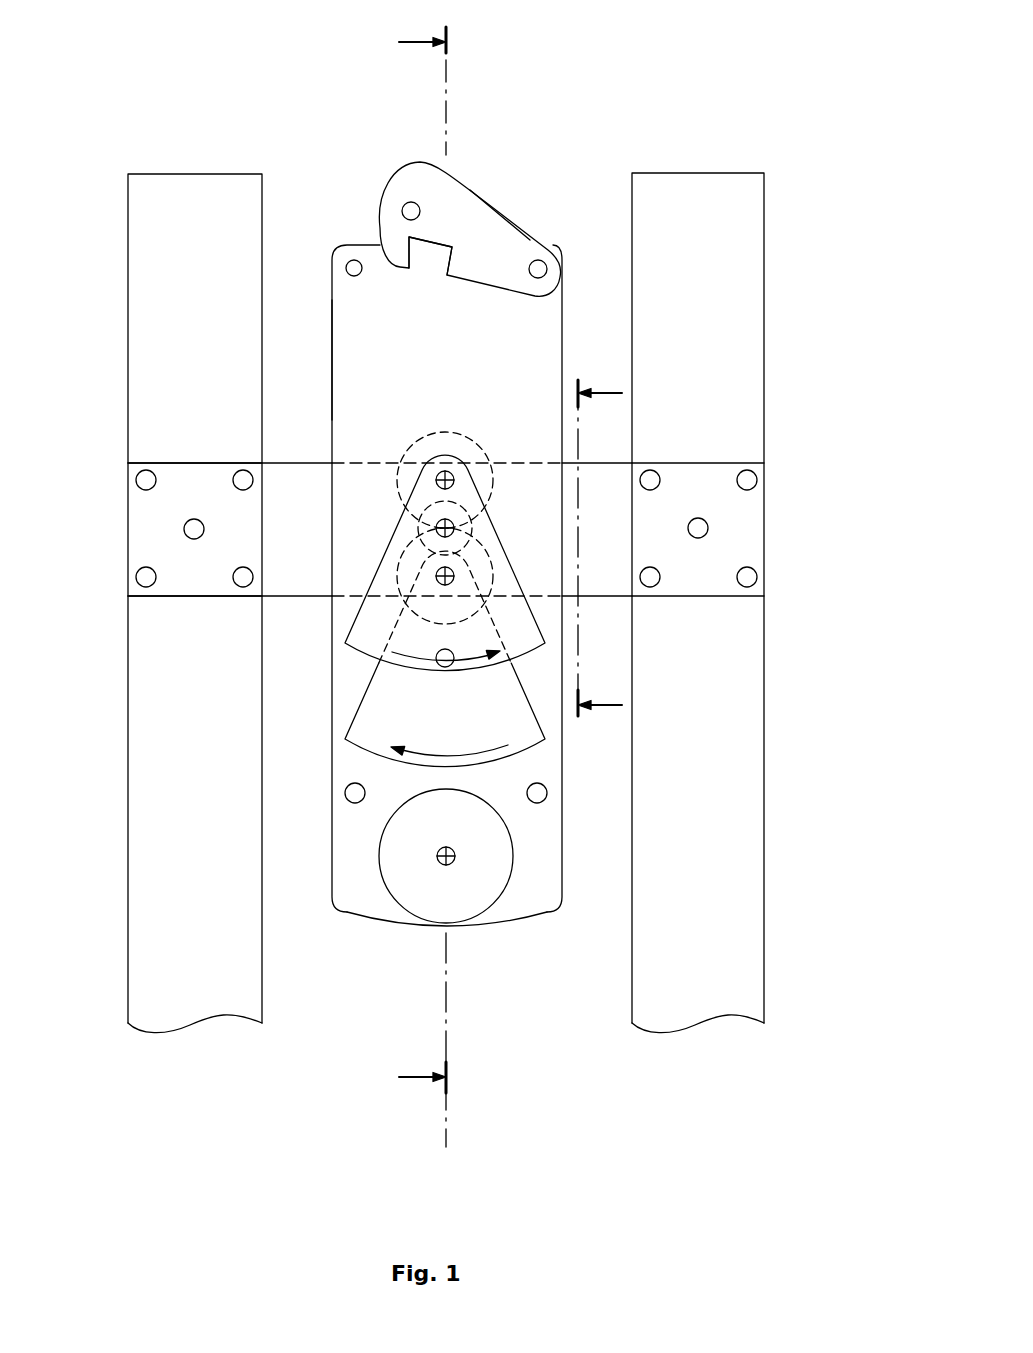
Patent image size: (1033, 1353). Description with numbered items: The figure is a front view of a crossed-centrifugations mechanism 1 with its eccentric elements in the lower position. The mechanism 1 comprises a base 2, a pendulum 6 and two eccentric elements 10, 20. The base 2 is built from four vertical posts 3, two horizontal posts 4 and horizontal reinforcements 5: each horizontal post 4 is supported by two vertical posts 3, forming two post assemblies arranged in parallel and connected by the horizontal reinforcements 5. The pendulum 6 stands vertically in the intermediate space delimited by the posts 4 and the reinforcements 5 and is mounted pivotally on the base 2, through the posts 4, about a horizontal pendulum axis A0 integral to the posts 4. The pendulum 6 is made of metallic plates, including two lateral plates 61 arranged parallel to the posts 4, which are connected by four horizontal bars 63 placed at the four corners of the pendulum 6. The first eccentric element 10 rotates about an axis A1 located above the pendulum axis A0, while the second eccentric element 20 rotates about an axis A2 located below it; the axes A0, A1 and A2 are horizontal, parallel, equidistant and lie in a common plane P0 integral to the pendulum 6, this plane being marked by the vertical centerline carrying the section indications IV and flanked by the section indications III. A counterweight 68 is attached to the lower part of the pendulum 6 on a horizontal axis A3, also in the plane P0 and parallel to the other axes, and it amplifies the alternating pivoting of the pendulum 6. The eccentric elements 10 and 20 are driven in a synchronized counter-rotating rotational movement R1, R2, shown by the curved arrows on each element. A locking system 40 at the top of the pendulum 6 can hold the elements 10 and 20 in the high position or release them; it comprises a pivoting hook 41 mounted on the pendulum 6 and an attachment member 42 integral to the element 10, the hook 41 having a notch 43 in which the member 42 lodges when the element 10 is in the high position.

The crossed-centrifugations mechanism 1 is at (120, 100).
The base 2 is at (803, 220).
The vertical posts 3 is at (152, 862).
The horizontal posts 4 is at (299, 480).
The horizontal reinforcements 5 is at (698, 528).
The pendulum 6 is at (572, 345).
The first eccentric element 10 is at (360, 640).
The second eccentric element 20 is at (360, 708).
The locking system 40 is at (480, 165).
The pivoting hook 41 is at (495, 233).
The attachment member 42 is at (450, 667).
The notch 43 is at (430, 270).
The lateral plates 61 is at (340, 341).
The horizontal bars 63 is at (353, 260).
The counterweight 68 is at (378, 888).
The pendulum axis A0 is at (454, 530).
The axis of rotation of the first eccentric element A1 is at (454, 480).
The axis of rotation of the second eccentric element A2 is at (452, 570).
The horizontal axis of the counterweight A3 is at (455, 857).
The rotational movement of the first eccentric element R1 is at (446, 642).
The rotational movement of the second eccentric element R2 is at (444, 740).
The plane P0 is at (443, 618).
The section line III is at (600, 540).
The section line IV is at (422, 554).